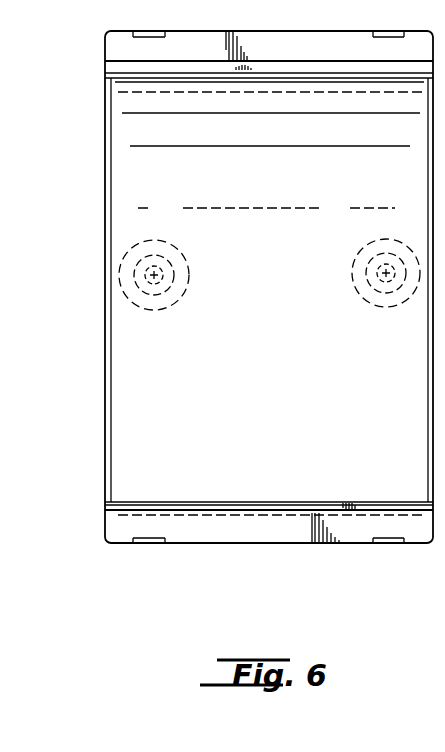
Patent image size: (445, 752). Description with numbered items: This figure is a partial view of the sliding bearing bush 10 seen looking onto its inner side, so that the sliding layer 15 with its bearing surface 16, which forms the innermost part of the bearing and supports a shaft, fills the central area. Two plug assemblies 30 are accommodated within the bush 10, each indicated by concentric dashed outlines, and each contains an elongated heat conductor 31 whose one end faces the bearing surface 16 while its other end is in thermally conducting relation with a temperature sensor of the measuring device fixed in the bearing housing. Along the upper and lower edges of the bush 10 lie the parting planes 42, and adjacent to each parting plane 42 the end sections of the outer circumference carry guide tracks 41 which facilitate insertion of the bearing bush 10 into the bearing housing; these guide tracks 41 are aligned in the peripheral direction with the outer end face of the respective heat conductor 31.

The sliding bearing bush 10 is at (101, 130).
The sliding layer 15 is at (124, 394).
The bearing surface 16 is at (291, 338).
The plug assembly 30 is at (167, 241).
The heat conductor 31 is at (154, 283).
The guide tracks 41 is at (148, 37).
The parting plane 42 is at (283, 58).